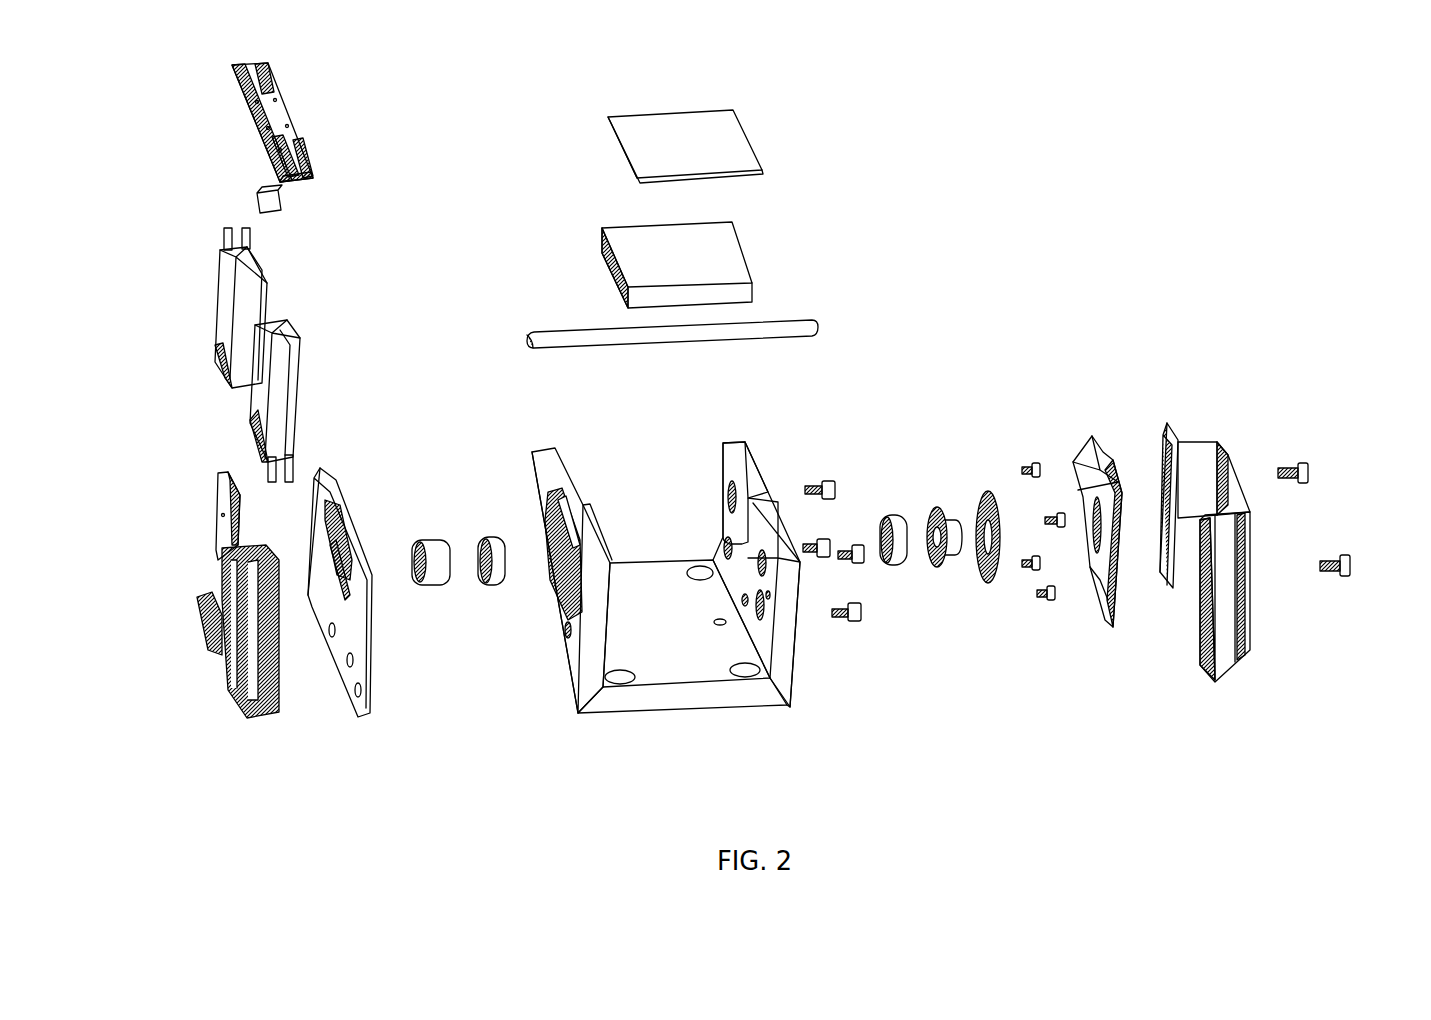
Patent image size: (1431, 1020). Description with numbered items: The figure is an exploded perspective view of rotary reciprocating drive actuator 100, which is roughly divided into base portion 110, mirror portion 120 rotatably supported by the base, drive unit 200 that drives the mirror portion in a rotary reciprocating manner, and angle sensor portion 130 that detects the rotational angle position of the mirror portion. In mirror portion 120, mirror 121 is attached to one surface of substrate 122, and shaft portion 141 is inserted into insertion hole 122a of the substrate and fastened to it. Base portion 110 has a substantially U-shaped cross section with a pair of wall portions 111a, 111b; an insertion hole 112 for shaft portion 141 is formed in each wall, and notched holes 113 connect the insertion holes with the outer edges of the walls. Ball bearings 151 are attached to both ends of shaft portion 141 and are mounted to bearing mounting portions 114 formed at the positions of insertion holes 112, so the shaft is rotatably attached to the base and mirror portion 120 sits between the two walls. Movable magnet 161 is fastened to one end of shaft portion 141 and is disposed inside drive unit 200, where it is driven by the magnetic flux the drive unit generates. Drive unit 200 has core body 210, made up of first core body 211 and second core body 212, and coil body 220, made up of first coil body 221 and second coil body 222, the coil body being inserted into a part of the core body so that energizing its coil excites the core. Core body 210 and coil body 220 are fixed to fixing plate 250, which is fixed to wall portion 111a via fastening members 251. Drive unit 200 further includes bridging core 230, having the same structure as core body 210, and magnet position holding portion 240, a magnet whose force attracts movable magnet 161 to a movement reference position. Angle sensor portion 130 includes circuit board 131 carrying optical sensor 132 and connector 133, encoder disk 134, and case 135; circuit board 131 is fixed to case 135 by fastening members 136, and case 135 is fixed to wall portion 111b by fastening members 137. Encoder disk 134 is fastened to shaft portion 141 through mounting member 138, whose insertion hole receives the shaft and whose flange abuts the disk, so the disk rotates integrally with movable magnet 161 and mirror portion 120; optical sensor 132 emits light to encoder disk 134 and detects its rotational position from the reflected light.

The rotary reciprocating drive actuator 100 is at (1156, 118).
The base portion 110 is at (800, 762).
The wall portion 111a is at (592, 665).
The wall portion 111b is at (775, 665).
The insertion hole 112 is at (732, 543).
The notched hole 113 is at (560, 515).
The bearing mounting portion 114 is at (548, 564).
The mirror portion 120 is at (832, 122).
The mirror 121 is at (732, 148).
The substrate 122 is at (712, 253).
The insertion hole 122a is at (605, 262).
The angle sensor portion 130 is at (1312, 760).
The circuit board 131 is at (1112, 625).
The optical sensor 132 is at (1078, 565).
The connector 133 is at (1090, 460).
The encoder disk 134 is at (988, 590).
The case 135 is at (1226, 648).
The fastening members 136 is at (1045, 586).
The fastening members 137 is at (1345, 565).
The mounting member 138 is at (935, 515).
The shaft portion 141 is at (800, 326).
The ball bearings 151 is at (490, 545).
The movable magnet 161 is at (430, 545).
The drive unit 200 is at (425, 764).
The core body 210 is at (260, 670).
The first core body 211 is at (273, 669).
The second core body 212 is at (215, 512).
The coil body 220 is at (250, 430).
The first coil body 221 is at (285, 412).
The second coil body 222 is at (225, 315).
The bridging core 230 is at (270, 90).
The magnet position holding portion 240 is at (255, 193).
The fixing plate 250 is at (372, 707).
The fastening members 251 is at (857, 548).